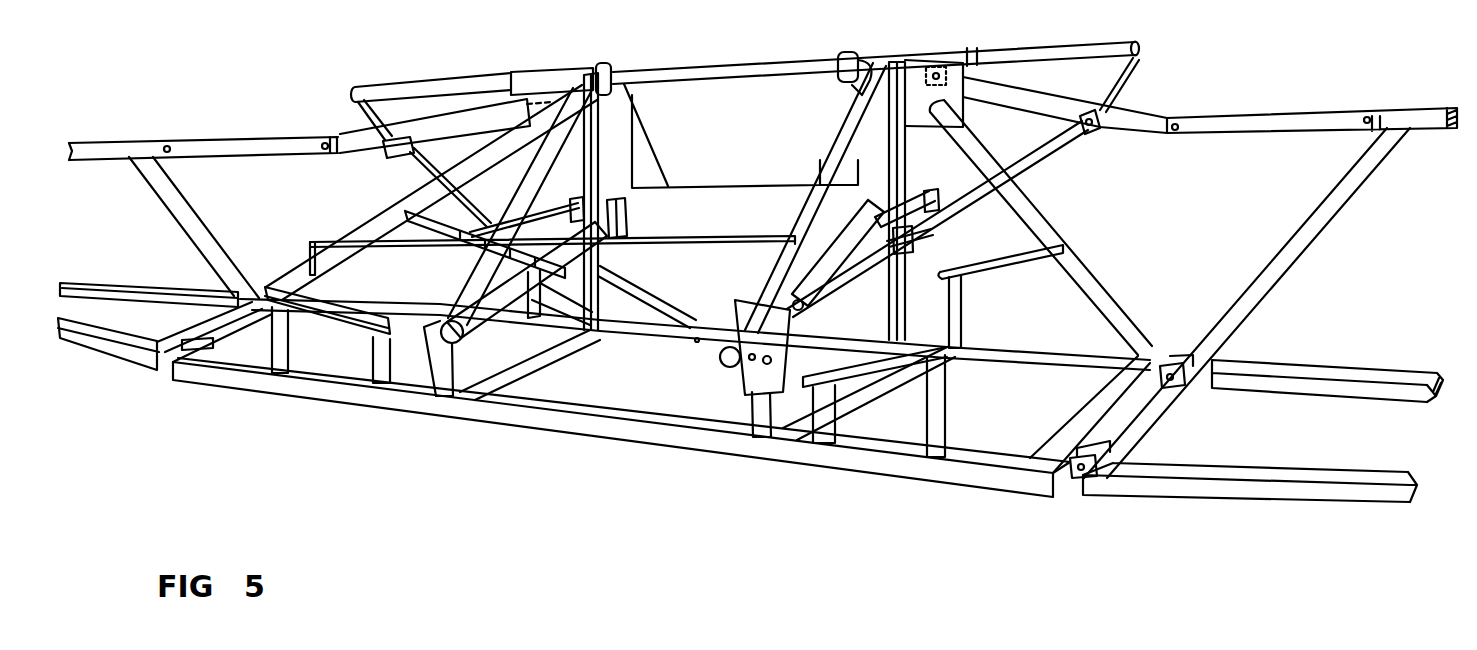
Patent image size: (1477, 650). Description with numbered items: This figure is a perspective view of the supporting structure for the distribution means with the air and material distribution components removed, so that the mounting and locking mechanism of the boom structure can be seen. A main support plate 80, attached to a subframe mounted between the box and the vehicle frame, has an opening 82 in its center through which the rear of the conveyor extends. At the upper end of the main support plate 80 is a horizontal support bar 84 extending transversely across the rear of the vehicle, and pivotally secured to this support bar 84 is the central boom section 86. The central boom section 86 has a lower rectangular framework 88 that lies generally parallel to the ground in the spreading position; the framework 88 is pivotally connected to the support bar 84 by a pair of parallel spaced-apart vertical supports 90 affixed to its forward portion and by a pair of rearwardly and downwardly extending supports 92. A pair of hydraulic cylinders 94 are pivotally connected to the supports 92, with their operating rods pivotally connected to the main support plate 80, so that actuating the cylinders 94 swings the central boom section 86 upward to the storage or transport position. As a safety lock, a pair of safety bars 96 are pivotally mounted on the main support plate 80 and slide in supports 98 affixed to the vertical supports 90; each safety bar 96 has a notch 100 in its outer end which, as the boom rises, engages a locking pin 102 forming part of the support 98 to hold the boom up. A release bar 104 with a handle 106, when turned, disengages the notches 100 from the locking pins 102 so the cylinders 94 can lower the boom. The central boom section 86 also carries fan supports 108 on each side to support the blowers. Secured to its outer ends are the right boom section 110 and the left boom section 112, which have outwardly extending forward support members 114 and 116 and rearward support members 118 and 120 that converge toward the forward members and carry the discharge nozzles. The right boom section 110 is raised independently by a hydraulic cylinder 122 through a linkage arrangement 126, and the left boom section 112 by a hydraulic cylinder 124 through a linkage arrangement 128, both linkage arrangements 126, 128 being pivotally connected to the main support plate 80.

The main support plate 80 is at (442, 108).
The opening 82 is at (647, 133).
The horizontal support bar 84 is at (740, 67).
The central boom section 86 is at (603, 456).
The lower rectangular framework 88 is at (548, 358).
The vertical supports 90 is at (603, 253).
The rearwardly and downwardly extending supports 92 is at (580, 67).
The hydraulic cylinders 94 is at (627, 222).
The safety bars 96 is at (477, 271).
The supports 98 is at (570, 197).
The notch 100 is at (808, 307).
The locking pins 102 is at (600, 217).
The release bar 104 is at (355, 240).
The handle 106 is at (308, 262).
The fan supports 108 is at (273, 357).
The right boom section 110 is at (1348, 340).
The left boom section 112 is at (95, 277).
The forward support member 114 is at (1372, 393).
The forward support member 116 is at (180, 283).
The rearward support member 118 is at (1307, 497).
The rearward support member 120 is at (127, 353).
The hydraulic cylinder 122 is at (1033, 163).
The hydraulic cylinder 124 is at (650, 295).
The linkage arrangement 126 is at (1130, 108).
The linkage arrangement 128 is at (350, 127).